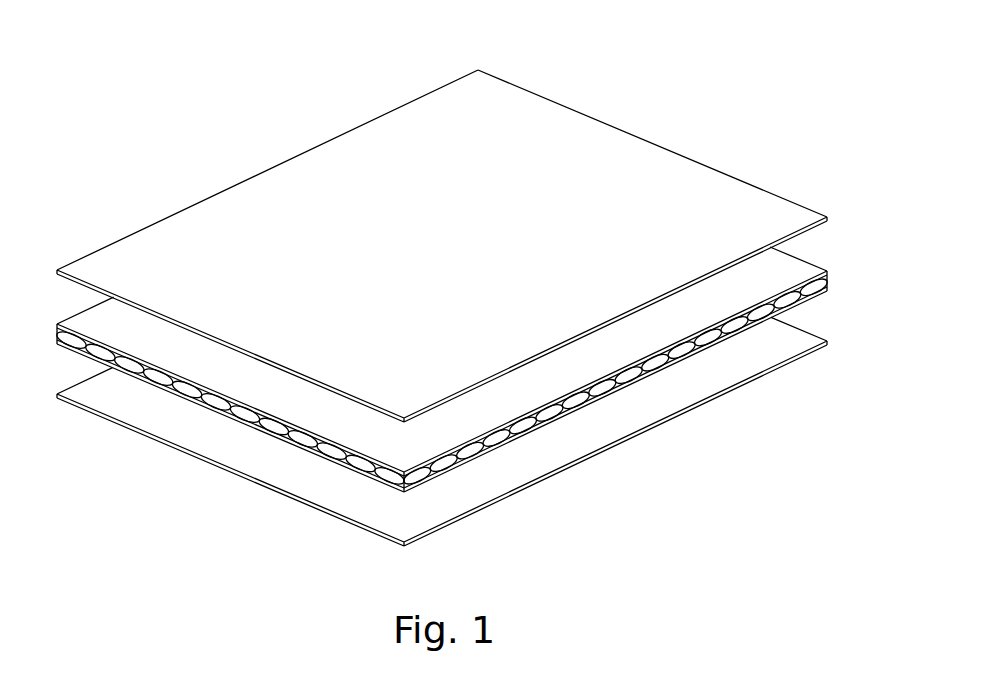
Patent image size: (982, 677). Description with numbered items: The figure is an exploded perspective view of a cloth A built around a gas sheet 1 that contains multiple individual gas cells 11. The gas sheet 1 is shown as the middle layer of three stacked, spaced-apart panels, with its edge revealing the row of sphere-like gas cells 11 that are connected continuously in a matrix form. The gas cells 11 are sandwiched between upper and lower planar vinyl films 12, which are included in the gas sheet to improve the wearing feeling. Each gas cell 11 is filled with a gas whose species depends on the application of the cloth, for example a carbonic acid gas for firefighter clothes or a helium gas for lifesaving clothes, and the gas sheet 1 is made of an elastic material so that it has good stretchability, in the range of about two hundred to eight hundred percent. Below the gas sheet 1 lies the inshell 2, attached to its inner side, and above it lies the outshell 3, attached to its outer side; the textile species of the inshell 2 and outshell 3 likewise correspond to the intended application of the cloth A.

The cloth A is at (288, 106).
The gas sheet 1 is at (307, 455).
The gas cells 11 is at (562, 415).
The planar vinyl films 12 is at (348, 463).
The inshell 2 is at (157, 420).
The outshell 3 is at (195, 228).